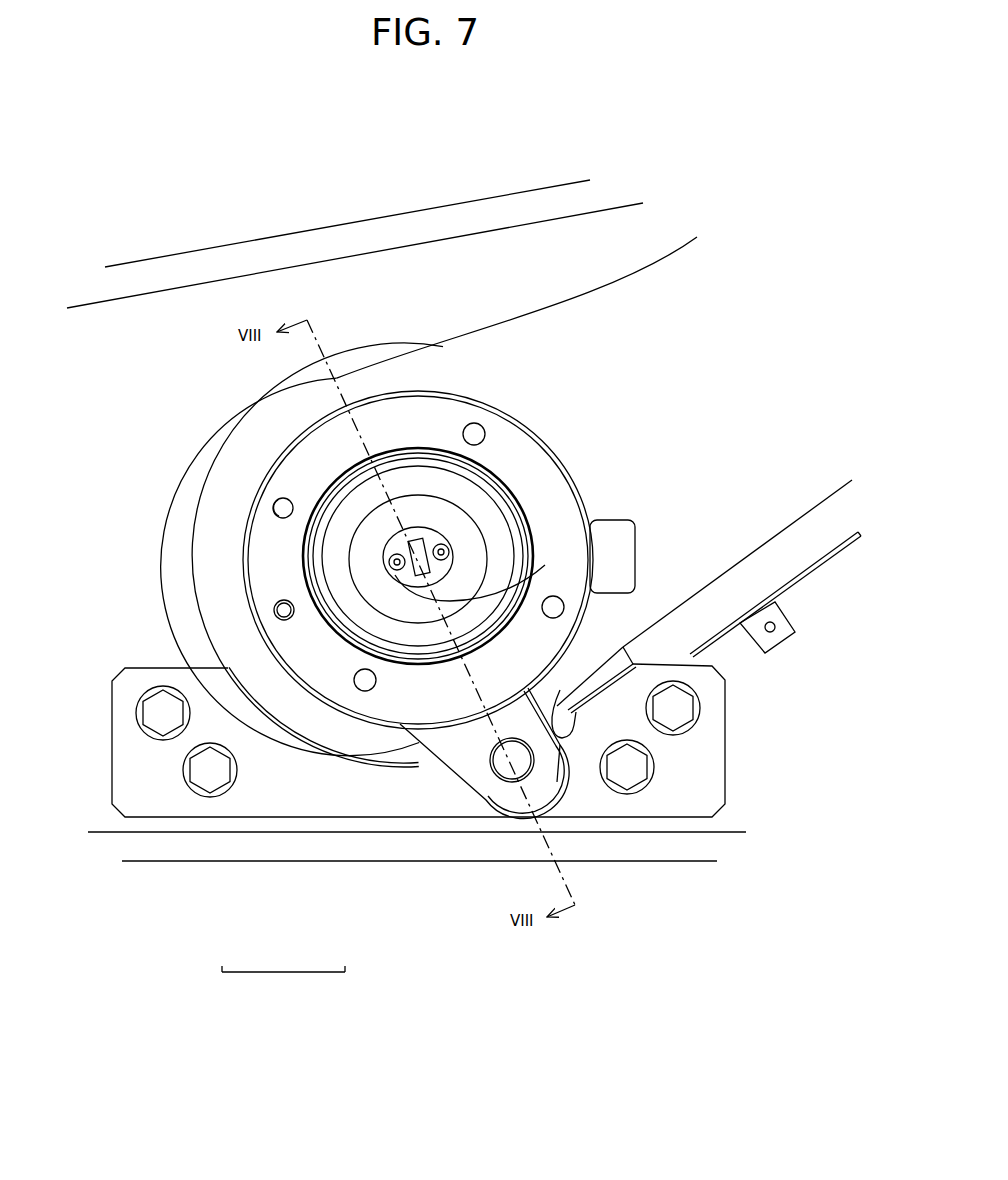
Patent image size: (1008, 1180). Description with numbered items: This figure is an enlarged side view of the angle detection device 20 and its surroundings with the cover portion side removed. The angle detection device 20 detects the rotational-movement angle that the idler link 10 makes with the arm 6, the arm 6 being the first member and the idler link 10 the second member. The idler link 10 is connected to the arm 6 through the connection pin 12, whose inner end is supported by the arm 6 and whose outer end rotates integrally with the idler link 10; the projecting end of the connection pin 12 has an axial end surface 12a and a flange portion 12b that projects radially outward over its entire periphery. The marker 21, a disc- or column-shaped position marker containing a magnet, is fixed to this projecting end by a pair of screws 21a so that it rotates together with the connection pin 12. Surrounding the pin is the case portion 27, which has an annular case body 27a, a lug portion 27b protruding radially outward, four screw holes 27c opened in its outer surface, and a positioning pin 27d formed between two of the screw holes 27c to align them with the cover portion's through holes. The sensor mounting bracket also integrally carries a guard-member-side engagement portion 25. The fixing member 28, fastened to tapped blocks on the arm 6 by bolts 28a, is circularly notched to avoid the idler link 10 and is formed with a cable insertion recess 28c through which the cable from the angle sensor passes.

The arm 6 is at (379, 212).
The idler link 10 is at (553, 328).
The connection pin 12 is at (283, 988).
The axial end surface 12a is at (340, 592).
The flange portion 12b is at (353, 628).
The angle detection device 20 is at (182, 508).
The marker 21 is at (420, 533).
The screws 21a is at (441, 552).
The guard-member-side engagement portion 25 is at (502, 766).
The case portion 27 is at (440, 420).
The case body 27a is at (497, 410).
The lug portion 27b is at (557, 780).
The screw holes 27c is at (275, 506).
The positioning pin 27d is at (274, 609).
The fixing member 28 is at (409, 795).
The bolts 28a is at (155, 723).
The cable insertion recess 28c is at (560, 690).